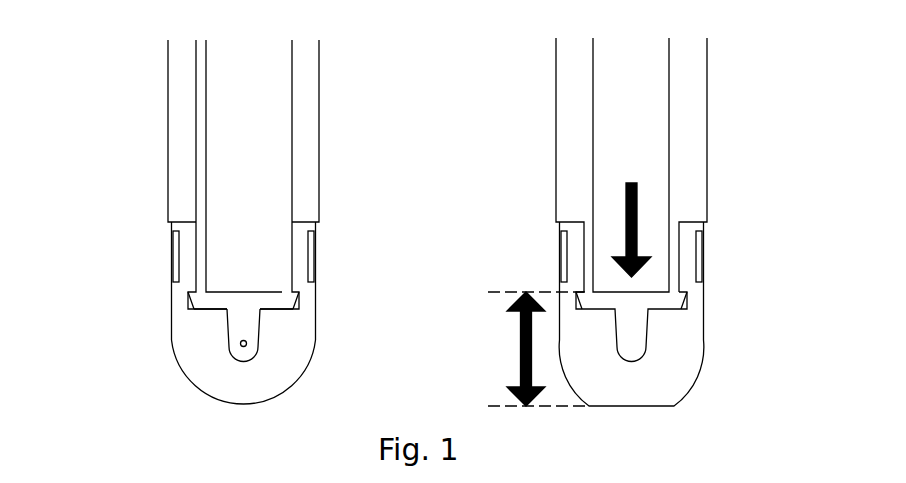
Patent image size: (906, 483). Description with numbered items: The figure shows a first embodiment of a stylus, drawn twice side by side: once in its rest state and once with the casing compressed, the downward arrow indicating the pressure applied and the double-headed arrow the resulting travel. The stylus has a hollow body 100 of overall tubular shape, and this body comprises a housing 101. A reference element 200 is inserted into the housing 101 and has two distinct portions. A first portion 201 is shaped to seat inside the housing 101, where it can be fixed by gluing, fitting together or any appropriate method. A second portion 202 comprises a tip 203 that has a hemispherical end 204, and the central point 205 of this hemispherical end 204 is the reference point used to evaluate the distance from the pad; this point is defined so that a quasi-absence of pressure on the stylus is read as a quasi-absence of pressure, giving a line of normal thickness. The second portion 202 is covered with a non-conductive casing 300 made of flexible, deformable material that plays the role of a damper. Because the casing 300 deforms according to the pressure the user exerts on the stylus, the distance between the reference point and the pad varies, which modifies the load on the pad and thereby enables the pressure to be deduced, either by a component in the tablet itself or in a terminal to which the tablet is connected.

The hollow body 100 is at (307, 143).
The housing 101 is at (248, 58).
The reference element 200 is at (200, 98).
The first portion 201 is at (200, 244).
The second portion 202 is at (290, 298).
The tip 203 is at (242, 315).
The hemispherical end 204 is at (243, 359).
The central point 205 is at (240, 343).
The non-conductive casing 300 is at (307, 338).